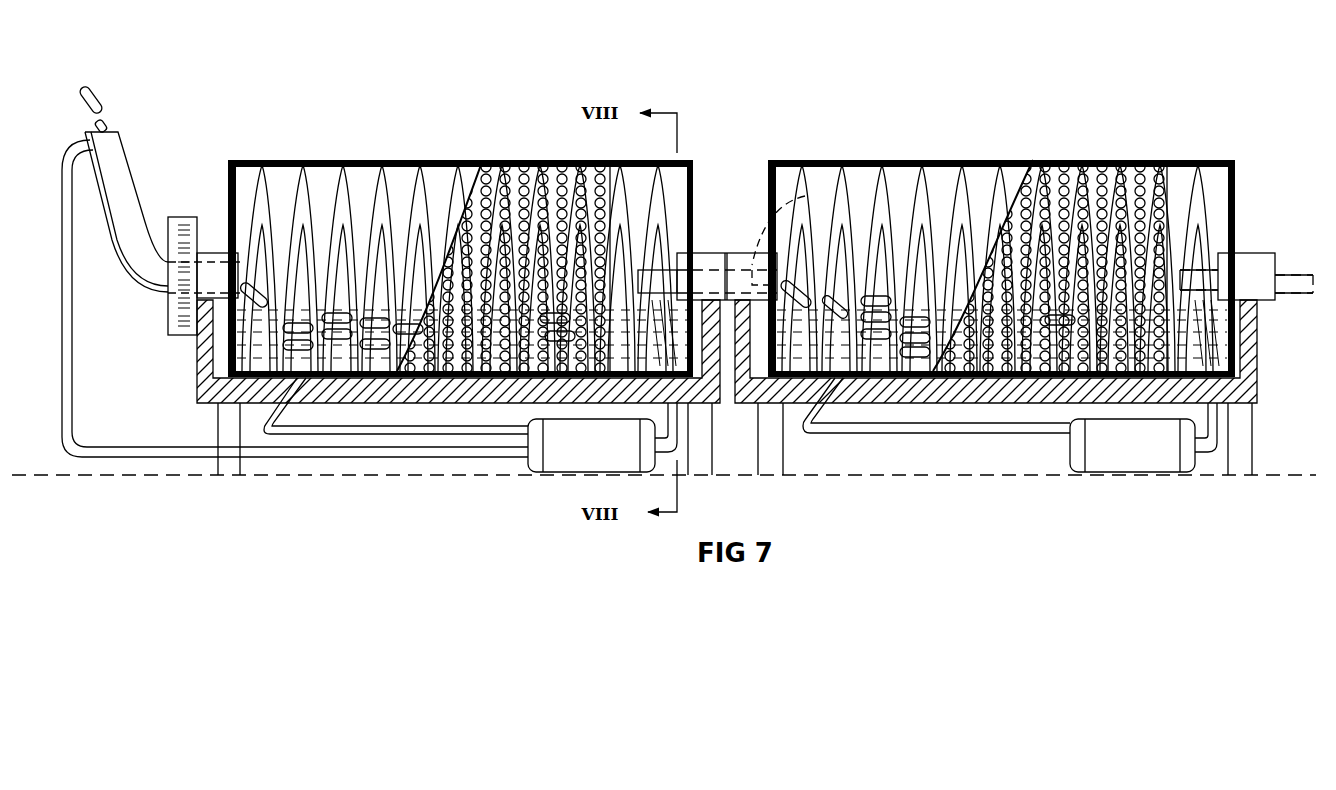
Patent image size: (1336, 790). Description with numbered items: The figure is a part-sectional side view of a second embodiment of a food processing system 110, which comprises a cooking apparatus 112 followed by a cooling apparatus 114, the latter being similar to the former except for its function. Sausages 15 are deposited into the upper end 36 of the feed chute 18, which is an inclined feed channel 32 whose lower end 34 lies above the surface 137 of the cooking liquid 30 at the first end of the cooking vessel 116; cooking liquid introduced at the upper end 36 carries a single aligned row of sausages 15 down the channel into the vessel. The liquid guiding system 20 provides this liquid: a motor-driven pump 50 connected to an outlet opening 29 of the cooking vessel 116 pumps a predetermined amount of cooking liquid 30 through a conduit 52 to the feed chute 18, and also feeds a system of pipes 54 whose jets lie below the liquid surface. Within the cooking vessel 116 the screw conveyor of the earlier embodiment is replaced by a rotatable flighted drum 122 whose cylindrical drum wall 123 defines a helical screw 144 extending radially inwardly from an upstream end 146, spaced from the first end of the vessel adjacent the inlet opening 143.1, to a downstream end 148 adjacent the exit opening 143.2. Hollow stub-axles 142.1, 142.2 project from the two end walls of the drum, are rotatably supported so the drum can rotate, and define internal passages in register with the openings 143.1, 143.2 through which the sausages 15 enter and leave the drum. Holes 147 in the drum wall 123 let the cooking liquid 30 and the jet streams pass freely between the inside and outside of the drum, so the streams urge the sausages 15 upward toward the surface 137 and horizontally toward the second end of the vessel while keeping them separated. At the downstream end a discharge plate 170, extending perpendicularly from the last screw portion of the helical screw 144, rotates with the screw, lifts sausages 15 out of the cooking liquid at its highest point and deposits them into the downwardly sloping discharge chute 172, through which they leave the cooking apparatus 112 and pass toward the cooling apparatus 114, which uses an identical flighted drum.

The processing system 110 is at (512, 68).
The cooking apparatus 112 is at (566, 102).
The cooling apparatus 114 is at (1063, 127).
The cooking vessel 116 is at (225, 392).
The rotatable flighted drum 122 is at (350, 163).
The cylindrical drum wall 123 is at (468, 165).
The surface of the cooking liquid 137 is at (425, 292).
The helical screw 144 is at (320, 163).
The upstream end of the helical screw 146 is at (250, 165).
The holes 147 is at (508, 167).
The downstream end of the helical screw 148 is at (702, 140).
The hollow stub-axle 142.1 is at (223, 253).
The hollow stub-axle 142.2 is at (708, 253).
The inlet opening 143.1 is at (240, 268).
The exit opening 143.2 is at (728, 258).
The discharge chute 172 is at (800, 236).
The lower end of the feed channel 34 is at (247, 262).
The sausages 15 is at (262, 298).
The feed chute 18 is at (133, 188).
The feed channel 32 is at (127, 252).
The upper end of the feed channel 36 is at (115, 128).
The liquid guiding system 20 is at (175, 352).
The cooking liquid 30 is at (265, 348).
The conduit 52 is at (137, 455).
The system of pipes 54 is at (283, 436).
The discharge plate 170 is at (861, 445).
The pump 50 is at (575, 462).
The outlet opening 29 is at (680, 428).